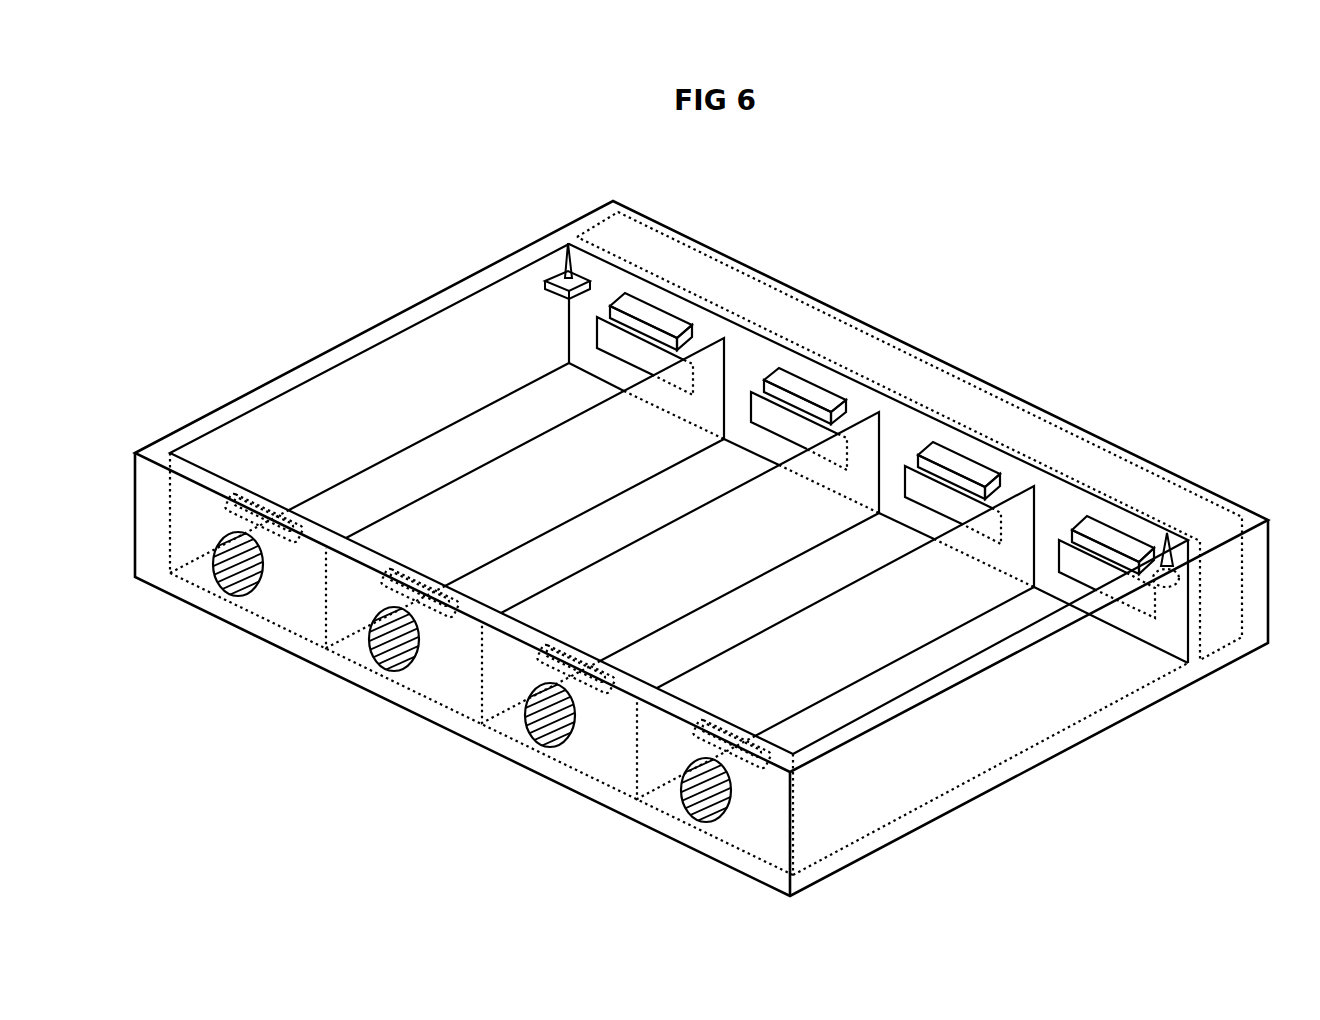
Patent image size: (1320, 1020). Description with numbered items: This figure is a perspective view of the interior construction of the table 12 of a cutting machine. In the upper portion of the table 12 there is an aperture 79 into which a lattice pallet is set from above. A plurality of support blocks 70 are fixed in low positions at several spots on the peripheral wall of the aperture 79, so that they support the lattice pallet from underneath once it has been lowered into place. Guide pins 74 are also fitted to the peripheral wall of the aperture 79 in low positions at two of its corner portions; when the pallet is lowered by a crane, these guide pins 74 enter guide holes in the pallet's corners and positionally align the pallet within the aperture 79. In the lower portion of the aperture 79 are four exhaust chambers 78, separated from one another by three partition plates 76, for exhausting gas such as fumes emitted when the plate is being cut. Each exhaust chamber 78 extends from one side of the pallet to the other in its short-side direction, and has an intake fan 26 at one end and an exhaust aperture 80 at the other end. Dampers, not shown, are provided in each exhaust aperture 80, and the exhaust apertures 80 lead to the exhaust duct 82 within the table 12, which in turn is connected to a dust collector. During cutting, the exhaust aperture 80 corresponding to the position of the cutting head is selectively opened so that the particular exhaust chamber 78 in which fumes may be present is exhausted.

The table 12 is at (352, 340).
The intake fan 26 is at (372, 652).
The support block 70 is at (653, 310).
The guide pin 74 is at (563, 252).
The partition plate 76 is at (458, 480).
The exhaust chamber 78 is at (512, 382).
The aperture 79 is at (523, 285).
The exhaust aperture 80 is at (628, 350).
The exhaust duct 82 is at (700, 250).